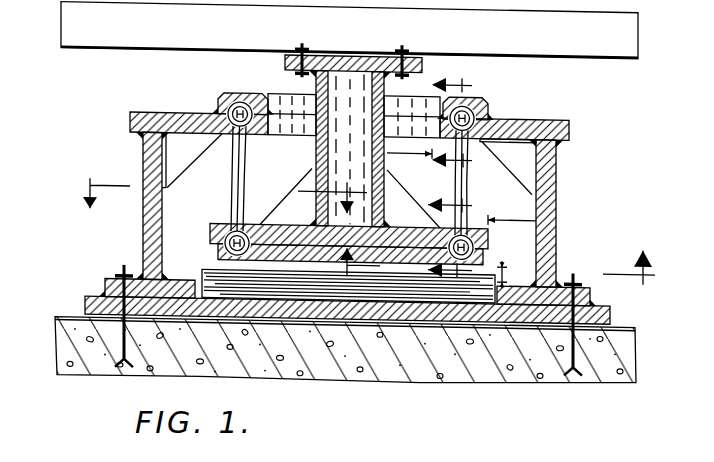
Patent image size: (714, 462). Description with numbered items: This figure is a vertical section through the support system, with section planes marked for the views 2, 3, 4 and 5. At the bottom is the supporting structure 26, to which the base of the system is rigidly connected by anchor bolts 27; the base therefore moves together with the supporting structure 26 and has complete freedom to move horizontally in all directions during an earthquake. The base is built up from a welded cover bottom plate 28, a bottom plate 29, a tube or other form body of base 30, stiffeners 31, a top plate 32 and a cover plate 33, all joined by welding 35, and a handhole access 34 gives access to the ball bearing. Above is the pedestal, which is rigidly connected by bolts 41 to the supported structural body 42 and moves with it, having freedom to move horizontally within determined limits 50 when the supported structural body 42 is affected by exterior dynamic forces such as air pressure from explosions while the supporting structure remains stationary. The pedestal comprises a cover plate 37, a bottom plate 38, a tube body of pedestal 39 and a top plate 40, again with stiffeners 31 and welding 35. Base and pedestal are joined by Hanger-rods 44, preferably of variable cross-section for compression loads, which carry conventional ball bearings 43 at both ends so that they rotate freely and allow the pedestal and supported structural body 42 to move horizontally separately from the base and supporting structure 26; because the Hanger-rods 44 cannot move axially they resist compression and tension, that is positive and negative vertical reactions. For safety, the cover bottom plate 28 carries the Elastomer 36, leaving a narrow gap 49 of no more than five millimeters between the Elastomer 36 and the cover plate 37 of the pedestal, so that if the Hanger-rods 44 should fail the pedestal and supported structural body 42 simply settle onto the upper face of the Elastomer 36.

The supporting structure 26 is at (447, 322).
The anchor bolts 27 is at (127, 344).
The cover bottom plate 28 is at (86, 305).
The bottom plate 29 is at (105, 283).
The body of base 30 is at (143, 236).
The stiffeners 31 is at (197, 152).
The top plate 32 is at (131, 122).
The cover plate 33 is at (226, 107).
The handhole access 34 is at (242, 91).
The welding 35 is at (143, 136).
The Elastomer 36 is at (241, 291).
The cover plate of pedestal 37 is at (218, 251).
The bottom plate of pedestal 38 is at (211, 230).
The body of pedestal 39 is at (329, 152).
The top plate of pedestal 40 is at (285, 62).
The bolts 41 is at (306, 46).
The supported structural body 42 is at (590, 5).
The ball bearing 43 is at (231, 226).
The Hanger-rods 44 is at (245, 167).
The narrow gap 49 is at (503, 263).
The determined limits 50 is at (461, 184).
The section line 2- 2 is at (218, 193).
The section line 3- 3 is at (494, 267).
The section line 4- 4 is at (460, 125).
The section line 5- 5 is at (458, 239).